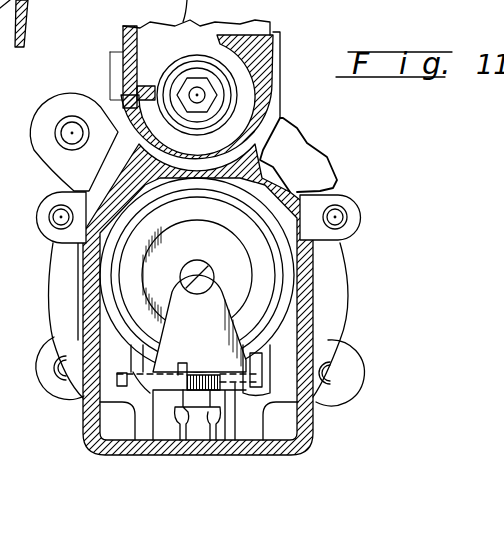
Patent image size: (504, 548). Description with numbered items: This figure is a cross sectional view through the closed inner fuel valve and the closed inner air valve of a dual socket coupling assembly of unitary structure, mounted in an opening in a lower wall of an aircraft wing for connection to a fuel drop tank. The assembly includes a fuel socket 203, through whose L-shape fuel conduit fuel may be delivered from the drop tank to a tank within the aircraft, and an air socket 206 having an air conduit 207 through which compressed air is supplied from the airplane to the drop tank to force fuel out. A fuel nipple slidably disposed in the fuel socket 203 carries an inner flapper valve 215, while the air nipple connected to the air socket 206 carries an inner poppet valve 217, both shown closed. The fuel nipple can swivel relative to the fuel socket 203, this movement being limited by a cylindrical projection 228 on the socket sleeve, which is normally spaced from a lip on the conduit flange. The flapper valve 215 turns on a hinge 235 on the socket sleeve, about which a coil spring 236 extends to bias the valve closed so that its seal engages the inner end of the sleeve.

The fuel socket 203 is at (305, 301).
The air socket 206 is at (270, 47).
The air conduit 207 is at (123, 40).
The inner flapper valve 215 is at (268, 266).
The inner poppet valve 217 is at (245, 100).
The cylindrical projection 228 is at (198, 393).
The hinge 235 is at (118, 398).
The coil spring 236 is at (206, 370).